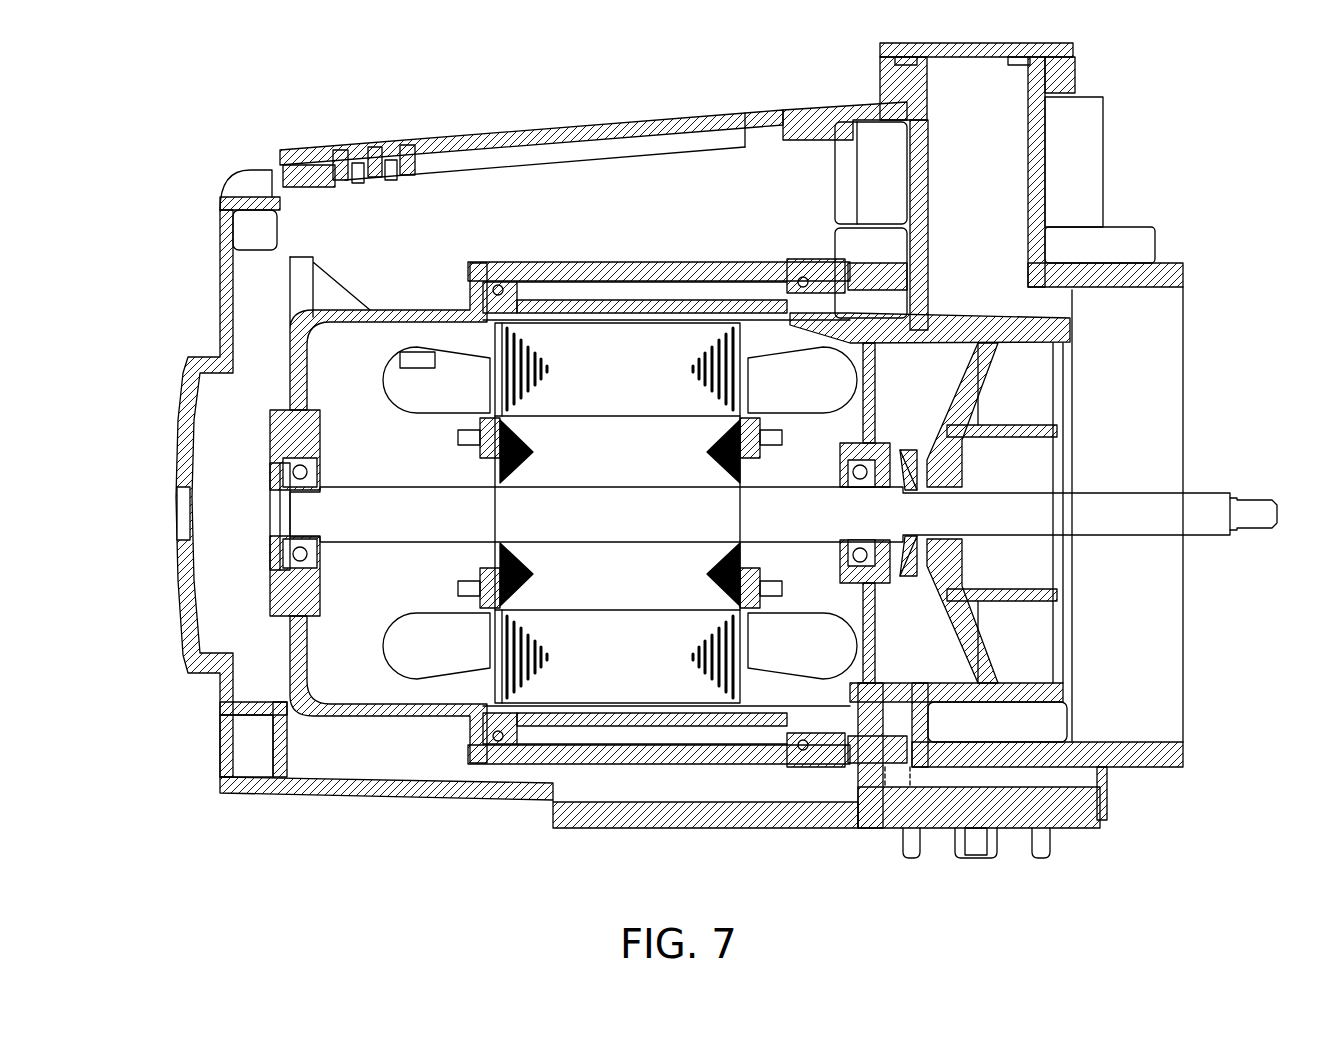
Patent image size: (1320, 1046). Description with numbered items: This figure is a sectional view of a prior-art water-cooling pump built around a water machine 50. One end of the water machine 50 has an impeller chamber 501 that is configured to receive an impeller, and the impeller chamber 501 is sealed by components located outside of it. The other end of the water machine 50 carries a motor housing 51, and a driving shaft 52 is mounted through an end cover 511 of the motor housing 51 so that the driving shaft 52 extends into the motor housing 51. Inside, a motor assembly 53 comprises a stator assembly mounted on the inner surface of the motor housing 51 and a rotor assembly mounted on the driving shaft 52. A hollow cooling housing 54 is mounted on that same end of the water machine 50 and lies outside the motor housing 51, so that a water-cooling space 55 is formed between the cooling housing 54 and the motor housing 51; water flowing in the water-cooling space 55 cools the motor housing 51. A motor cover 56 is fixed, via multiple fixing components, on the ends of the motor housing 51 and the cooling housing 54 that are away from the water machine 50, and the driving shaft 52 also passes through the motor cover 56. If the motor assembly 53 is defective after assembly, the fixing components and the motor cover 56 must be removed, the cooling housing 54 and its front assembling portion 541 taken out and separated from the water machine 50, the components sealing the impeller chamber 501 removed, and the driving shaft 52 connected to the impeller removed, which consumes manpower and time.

The water machine 50 is at (1105, 86).
The impeller chamber 501 is at (1115, 730).
The end cover 511 is at (870, 403).
The motor housing 51 is at (587, 316).
The driving shaft 52 is at (313, 505).
The motor assembly 53 is at (458, 560).
The cooling housing 54 is at (652, 270).
The front assembling portion 541 is at (838, 757).
The water-cooling space 55 is at (578, 733).
The motor cover 56 is at (303, 340).